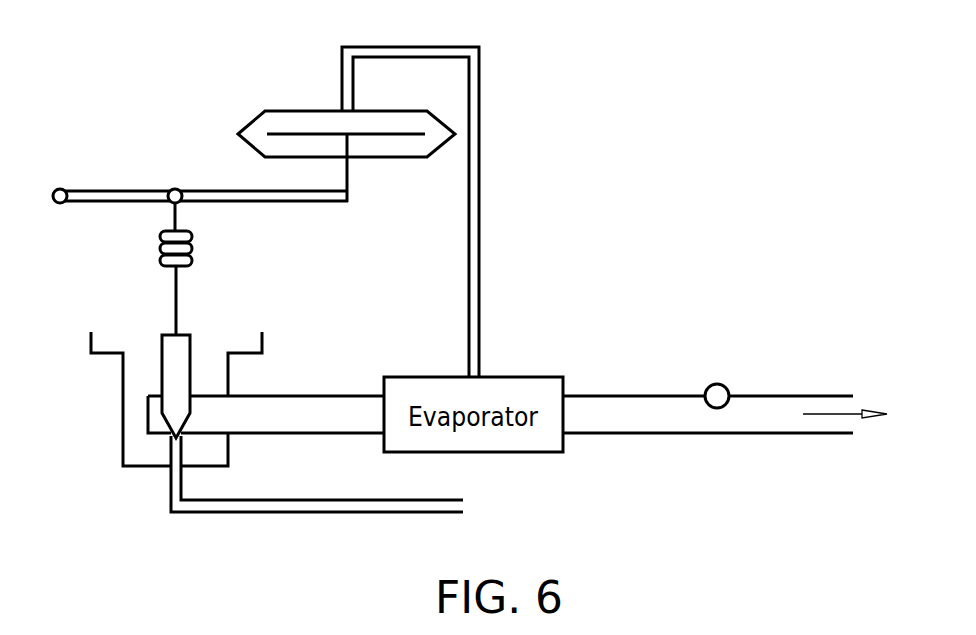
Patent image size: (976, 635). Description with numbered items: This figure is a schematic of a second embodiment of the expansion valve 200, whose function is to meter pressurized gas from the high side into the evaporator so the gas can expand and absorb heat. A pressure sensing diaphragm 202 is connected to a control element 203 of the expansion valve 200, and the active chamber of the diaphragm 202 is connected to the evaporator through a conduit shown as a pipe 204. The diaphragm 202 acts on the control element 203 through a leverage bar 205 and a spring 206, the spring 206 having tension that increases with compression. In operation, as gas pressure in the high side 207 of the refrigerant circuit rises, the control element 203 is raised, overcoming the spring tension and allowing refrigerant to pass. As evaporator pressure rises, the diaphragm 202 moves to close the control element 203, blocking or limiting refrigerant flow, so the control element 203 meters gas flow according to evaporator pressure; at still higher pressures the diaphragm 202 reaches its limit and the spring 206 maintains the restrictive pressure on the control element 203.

The expansion valve 200 is at (622, 195).
The pressure sensing diaphragm 202 is at (276, 110).
The control element 203 is at (160, 345).
The pipe 204 is at (479, 72).
The leverage bar 205 is at (128, 189).
The spring 206 is at (193, 236).
The high side 207 is at (170, 486).